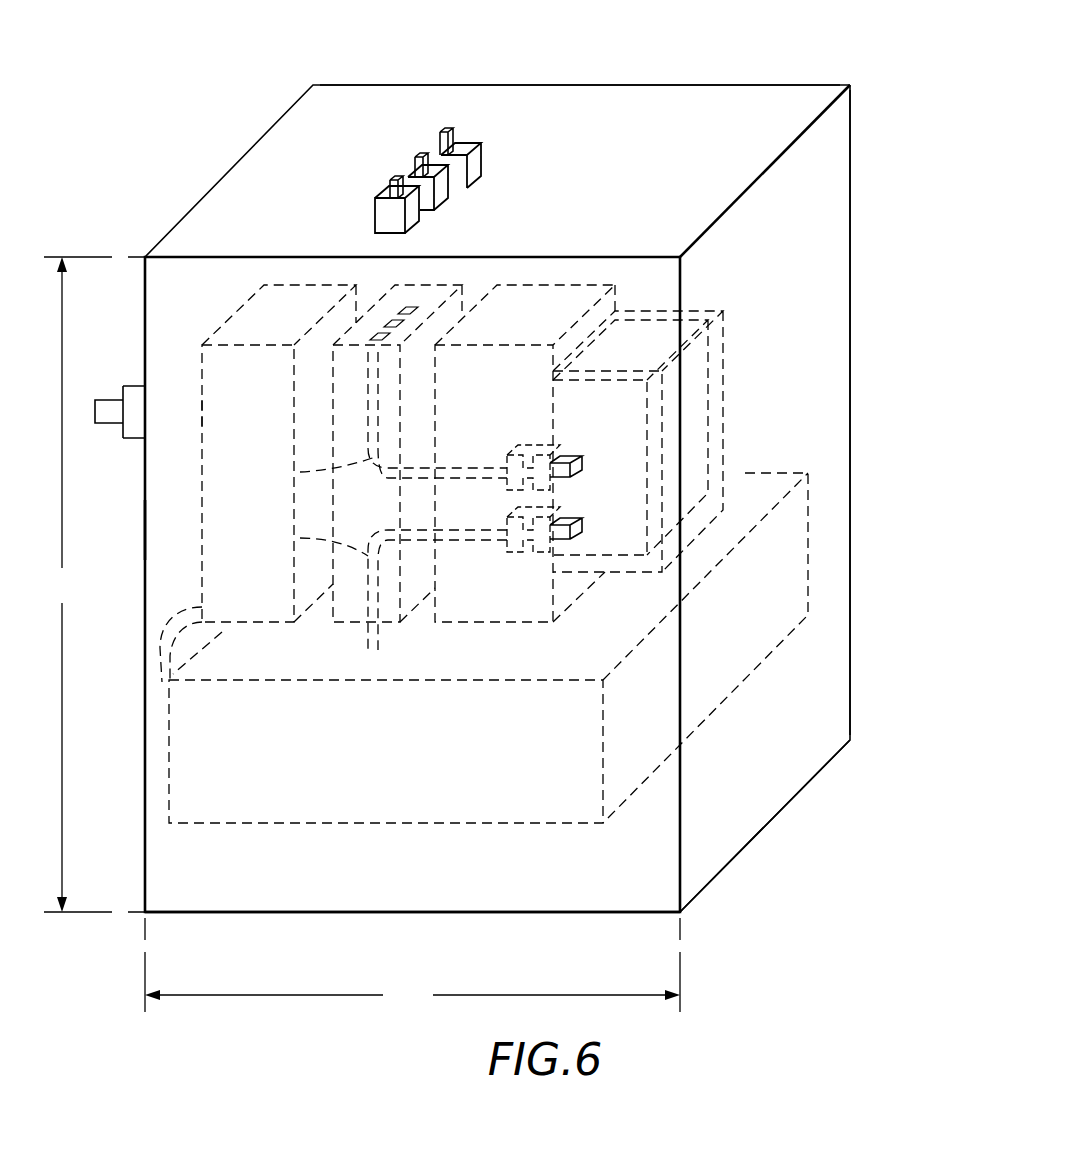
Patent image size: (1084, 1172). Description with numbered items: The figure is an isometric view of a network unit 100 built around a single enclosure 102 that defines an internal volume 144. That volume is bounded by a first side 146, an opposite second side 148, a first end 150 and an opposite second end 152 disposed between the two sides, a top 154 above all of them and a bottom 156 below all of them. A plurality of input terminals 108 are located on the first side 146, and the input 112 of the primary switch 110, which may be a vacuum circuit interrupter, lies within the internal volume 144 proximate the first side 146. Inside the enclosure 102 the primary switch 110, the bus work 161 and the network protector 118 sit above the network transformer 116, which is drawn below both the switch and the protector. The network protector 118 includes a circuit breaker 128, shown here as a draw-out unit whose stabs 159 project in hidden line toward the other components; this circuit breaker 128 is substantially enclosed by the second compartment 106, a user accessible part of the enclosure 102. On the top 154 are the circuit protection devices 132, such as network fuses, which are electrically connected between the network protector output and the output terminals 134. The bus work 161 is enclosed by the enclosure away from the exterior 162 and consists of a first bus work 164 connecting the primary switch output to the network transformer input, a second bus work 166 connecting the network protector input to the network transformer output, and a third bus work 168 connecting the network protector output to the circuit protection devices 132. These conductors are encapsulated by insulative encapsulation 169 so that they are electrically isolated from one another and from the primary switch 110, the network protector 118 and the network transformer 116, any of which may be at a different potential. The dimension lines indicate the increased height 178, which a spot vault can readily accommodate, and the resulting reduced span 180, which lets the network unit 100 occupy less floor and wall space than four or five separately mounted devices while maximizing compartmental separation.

The network unit 100 is at (241, 83).
The enclosure 102 is at (205, 173).
The second compartment 106 is at (623, 563).
The input terminals 108 is at (106, 398).
The primary switch 110 is at (281, 293).
The input of the primary switch 112 is at (202, 412).
The network transformer 116 is at (737, 660).
The network protector 118 is at (535, 292).
The circuit breaker 128 is at (697, 388).
The circuit protection devices 132 is at (375, 210).
The output terminals 134 is at (392, 180).
The internal volume 144 is at (160, 540).
The first side 146 is at (166, 755).
The opposite second side 148 is at (832, 305).
The first end 150 is at (524, 890).
The opposite second end 152 is at (404, 85).
The top 154 is at (700, 103).
The bottom 156 is at (300, 913).
The stabs 159 is at (532, 452).
The bus work 161 is at (441, 292).
The exterior 162 is at (738, 920).
The first bus work 164 is at (160, 665).
The second bus work 166 is at (300, 538).
The third bus work 168 is at (300, 472).
The insulative encapsulation 169 is at (370, 458).
The increased height 178 is at (93, 584).
The reduced span 180 is at (412, 965).